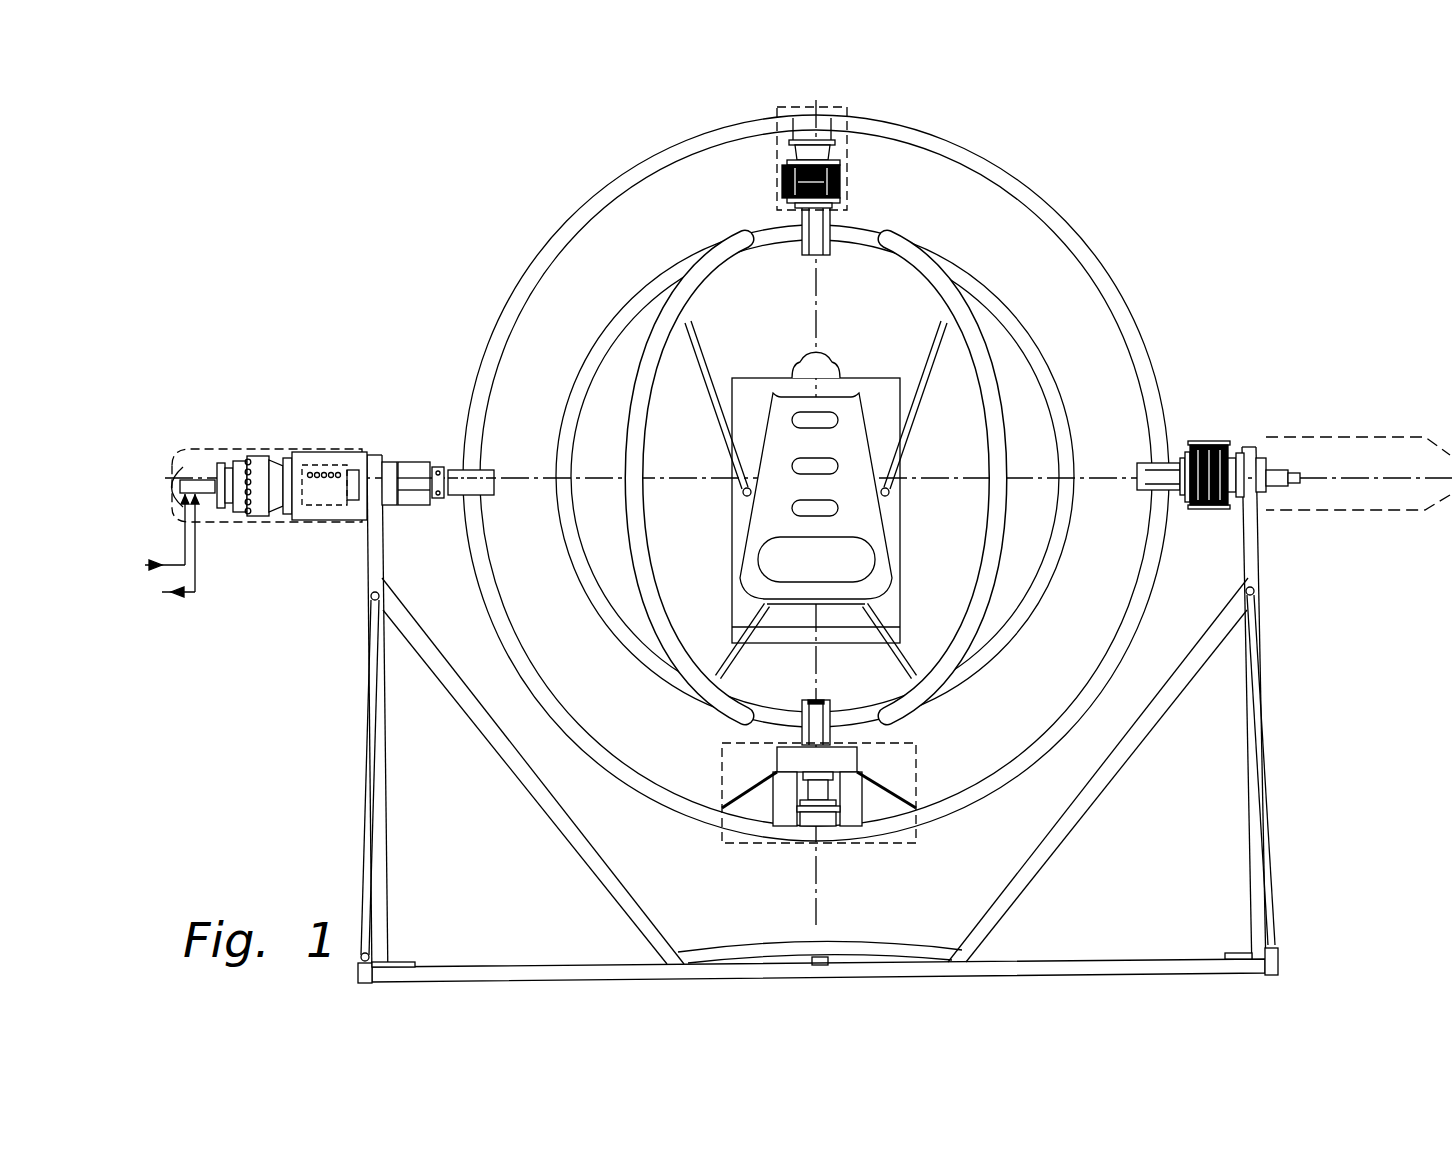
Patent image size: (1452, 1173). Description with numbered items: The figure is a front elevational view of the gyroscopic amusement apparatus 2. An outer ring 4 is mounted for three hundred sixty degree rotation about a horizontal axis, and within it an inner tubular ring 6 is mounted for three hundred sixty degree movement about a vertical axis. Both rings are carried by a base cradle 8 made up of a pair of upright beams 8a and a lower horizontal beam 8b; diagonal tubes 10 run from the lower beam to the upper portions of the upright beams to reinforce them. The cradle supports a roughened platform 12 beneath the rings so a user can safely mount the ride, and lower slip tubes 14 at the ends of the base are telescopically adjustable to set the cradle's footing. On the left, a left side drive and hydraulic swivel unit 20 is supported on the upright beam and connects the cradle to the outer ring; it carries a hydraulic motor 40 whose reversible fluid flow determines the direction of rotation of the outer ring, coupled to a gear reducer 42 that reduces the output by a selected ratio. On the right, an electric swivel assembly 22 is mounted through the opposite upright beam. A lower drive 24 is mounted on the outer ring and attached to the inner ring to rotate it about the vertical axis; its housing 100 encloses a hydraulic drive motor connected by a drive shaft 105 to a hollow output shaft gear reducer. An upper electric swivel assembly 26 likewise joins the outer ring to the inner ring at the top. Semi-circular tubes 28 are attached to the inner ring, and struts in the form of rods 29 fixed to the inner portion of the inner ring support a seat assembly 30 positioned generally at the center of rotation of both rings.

The gyroscopic amusement apparatus 2 is at (1150, 232).
The outer ring 4 is at (584, 195).
The inner tubular ring 6 is at (1017, 323).
The base cradle 8 is at (826, 715).
The upright beams 8a is at (367, 540).
The lower horizontal beam 8b is at (1078, 962).
The diagonal tubes 10 is at (528, 785).
The platform 12 is at (740, 952).
The lower slip tubes 14 is at (1280, 958).
The left side drive and hydraulic swivel unit 20 is at (293, 452).
The electric swivel assembly 22 is at (1205, 443).
The lower drive 24 is at (849, 803).
The upper electric swivel assembly 26 is at (840, 148).
The semi-circular tubes 28 is at (665, 348).
The rods 29 is at (713, 363).
The seat assembly 30 is at (887, 518).
The hydraulic motor 40 is at (183, 467).
The gear reducer 42 is at (252, 453).
The housing 100 is at (850, 823).
The drive shaft 105 is at (810, 813).